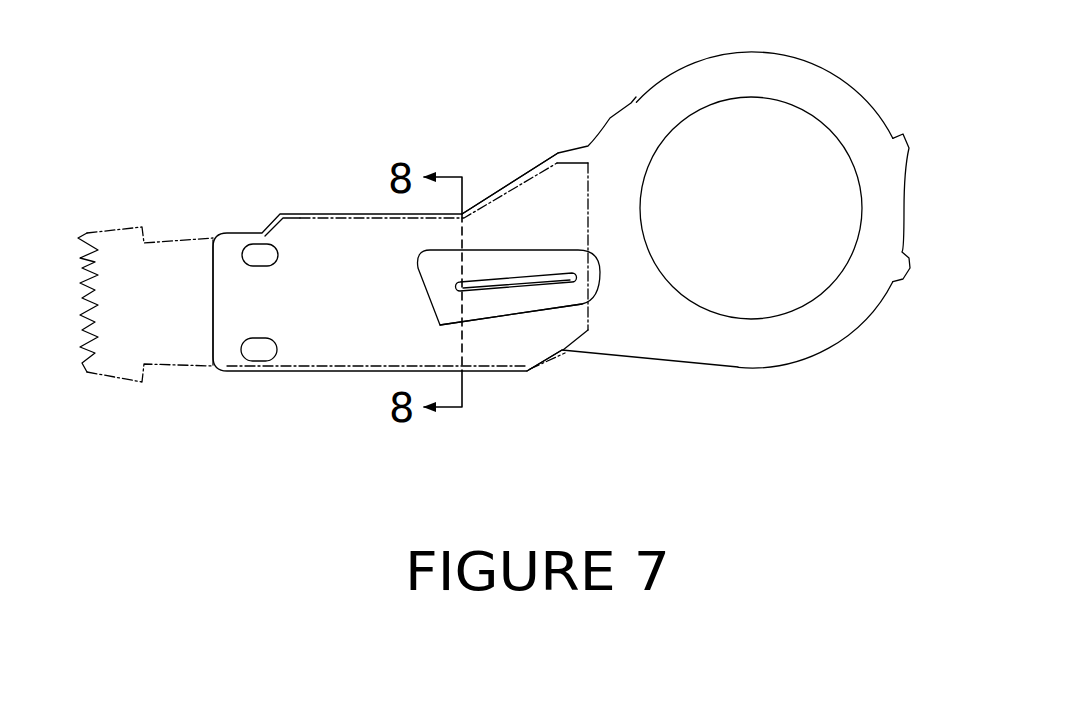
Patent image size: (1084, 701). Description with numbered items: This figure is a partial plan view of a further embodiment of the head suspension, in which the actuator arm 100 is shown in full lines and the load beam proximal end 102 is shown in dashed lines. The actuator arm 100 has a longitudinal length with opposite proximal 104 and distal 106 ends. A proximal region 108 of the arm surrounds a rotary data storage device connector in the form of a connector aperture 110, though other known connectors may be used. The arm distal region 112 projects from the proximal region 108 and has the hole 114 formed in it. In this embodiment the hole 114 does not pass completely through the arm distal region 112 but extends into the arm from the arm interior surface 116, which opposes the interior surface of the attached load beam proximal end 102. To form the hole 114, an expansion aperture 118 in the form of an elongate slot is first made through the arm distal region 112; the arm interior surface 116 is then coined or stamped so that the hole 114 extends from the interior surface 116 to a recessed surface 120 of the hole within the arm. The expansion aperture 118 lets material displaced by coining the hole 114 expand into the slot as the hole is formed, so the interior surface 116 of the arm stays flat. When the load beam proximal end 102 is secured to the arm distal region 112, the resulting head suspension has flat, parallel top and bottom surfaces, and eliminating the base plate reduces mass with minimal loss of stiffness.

The actuator arm 100 is at (687, 90).
The load beam proximal end 102 is at (313, 252).
The proximal end 104 is at (912, 205).
The distal end 106 is at (213, 320).
The proximal region 108 is at (777, 337).
The connector aperture 110 is at (783, 155).
The arm distal region 112 is at (335, 325).
The hole 114 is at (504, 300).
The arm interior surface 116 is at (520, 213).
The expansion aperture 118 is at (544, 275).
The recessed surface 120 is at (560, 295).